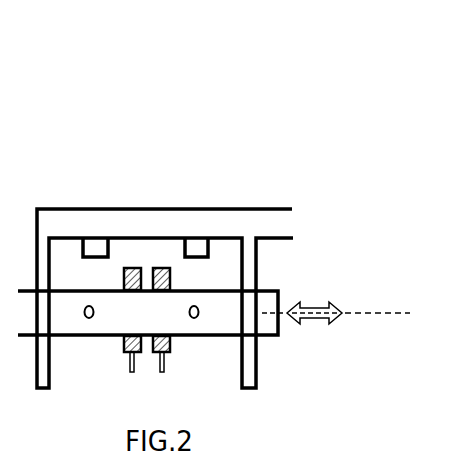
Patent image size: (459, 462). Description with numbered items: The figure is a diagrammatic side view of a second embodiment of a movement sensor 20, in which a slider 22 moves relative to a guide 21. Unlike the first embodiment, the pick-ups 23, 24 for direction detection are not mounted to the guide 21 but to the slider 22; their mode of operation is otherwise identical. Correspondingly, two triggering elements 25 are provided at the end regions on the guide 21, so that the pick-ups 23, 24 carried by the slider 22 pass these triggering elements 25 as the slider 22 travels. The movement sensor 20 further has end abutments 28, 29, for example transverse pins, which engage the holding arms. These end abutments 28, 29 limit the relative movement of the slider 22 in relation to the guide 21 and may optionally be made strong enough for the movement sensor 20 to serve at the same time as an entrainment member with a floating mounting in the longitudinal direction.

The movement sensor 20 is at (97, 130).
The guide 21 is at (276, 219).
The slider 22 is at (226, 318).
The pick-up 23 is at (130, 267).
The pick-up 24 is at (160, 267).
The triggering elements 25 is at (92, 244).
The end abutment 28 is at (89, 318).
The end abutment 29 is at (194, 318).